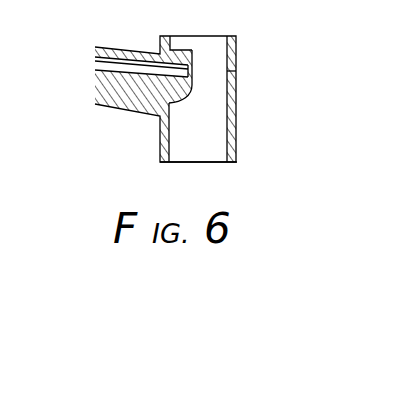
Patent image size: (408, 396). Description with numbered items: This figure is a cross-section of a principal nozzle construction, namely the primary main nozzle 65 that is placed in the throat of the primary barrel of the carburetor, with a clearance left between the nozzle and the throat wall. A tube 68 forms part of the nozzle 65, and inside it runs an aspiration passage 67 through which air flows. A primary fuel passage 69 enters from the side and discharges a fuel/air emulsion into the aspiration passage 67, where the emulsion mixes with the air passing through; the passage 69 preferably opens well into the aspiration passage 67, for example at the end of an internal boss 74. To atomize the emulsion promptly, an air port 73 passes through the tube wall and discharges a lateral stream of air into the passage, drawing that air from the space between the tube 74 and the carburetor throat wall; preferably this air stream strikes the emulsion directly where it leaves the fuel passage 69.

The primary main nozzle 65 is at (246, 113).
The aspiration passage 67 is at (208, 152).
The tube 68 is at (236, 146).
The primary fuel passage 69 is at (125, 60).
The air port 73 is at (237, 72).
The internal boss 74 is at (183, 97).